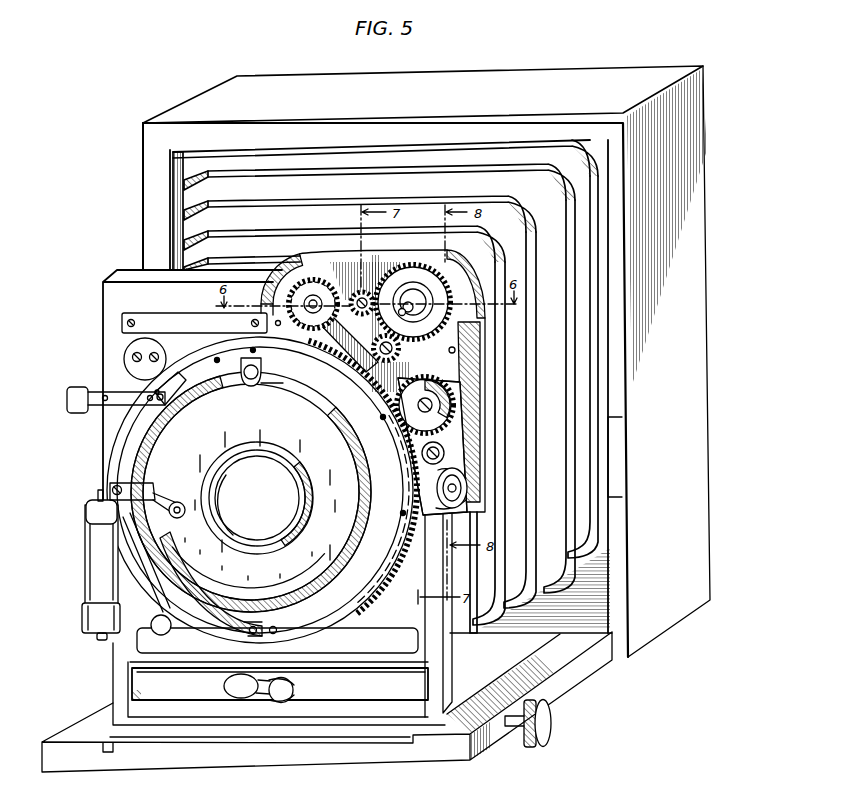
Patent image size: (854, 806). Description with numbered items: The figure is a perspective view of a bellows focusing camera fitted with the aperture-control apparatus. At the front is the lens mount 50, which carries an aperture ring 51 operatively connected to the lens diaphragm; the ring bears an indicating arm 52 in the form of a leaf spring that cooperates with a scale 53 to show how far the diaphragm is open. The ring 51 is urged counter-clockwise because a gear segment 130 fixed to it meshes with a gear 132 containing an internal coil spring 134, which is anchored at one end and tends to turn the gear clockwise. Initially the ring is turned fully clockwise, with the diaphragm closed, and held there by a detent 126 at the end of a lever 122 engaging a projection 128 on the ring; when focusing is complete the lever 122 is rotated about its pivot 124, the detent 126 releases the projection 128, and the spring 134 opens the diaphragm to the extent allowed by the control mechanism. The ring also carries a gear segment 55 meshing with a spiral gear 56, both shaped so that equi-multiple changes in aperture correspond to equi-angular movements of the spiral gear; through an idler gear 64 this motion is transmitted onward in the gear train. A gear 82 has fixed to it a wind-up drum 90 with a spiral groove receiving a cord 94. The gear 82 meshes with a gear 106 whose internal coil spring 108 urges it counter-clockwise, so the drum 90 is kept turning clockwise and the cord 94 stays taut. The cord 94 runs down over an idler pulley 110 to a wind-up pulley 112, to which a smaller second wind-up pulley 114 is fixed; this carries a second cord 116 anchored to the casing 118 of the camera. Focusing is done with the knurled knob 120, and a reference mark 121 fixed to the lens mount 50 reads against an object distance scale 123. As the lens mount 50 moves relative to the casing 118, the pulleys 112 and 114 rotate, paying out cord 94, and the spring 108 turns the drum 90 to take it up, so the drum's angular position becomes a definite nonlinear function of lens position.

The lens mount 50 is at (172, 456).
The aperture ring 51 is at (325, 625).
The indicating arm 52 is at (180, 565).
The scale 53 is at (84, 548).
The gear segment 55 is at (313, 340).
The spiral gear 56 is at (314, 282).
The idler gear 64 is at (375, 262).
The gear 82 is at (423, 302).
The wind-up drum 90 is at (440, 312).
The cord 94 is at (440, 428).
The gear 106 is at (400, 366).
The internal coil spring 108 is at (407, 345).
The idler pulley 110 is at (447, 447).
The wind-up pulley 112 is at (460, 477).
The second wind-up pulley 114 is at (462, 492).
The second cord 116 is at (604, 400).
The casing 118 is at (426, 361).
The knurled knob 120 is at (549, 723).
The reference mark 121 is at (440, 735).
The lever 122 is at (97, 392).
The object distance scale 123 is at (543, 674).
The pivot 124 is at (112, 410).
The detent 126 is at (163, 400).
The projection 128 is at (160, 393).
The gear segment 130 is at (384, 588).
The gear 132 is at (457, 383).
The internal coil spring 134 is at (460, 400).